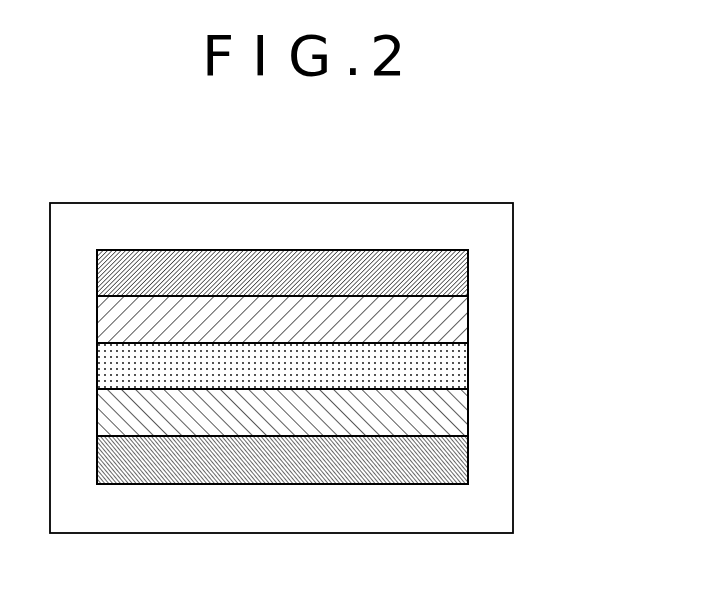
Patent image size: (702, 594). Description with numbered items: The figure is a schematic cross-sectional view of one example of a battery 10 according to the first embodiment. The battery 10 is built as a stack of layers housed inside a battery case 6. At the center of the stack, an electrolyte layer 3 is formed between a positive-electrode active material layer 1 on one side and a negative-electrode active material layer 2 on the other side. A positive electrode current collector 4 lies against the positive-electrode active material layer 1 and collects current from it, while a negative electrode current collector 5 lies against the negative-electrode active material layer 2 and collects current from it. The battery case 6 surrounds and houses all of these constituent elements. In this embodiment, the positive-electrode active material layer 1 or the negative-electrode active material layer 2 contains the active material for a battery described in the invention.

The battery 10 is at (496, 170).
The battery case 6 is at (482, 234).
The positive electrode current collector 4 is at (435, 280).
The positive-electrode active material layer 1 is at (435, 327).
The electrolyte layer 3 is at (435, 375).
The negative-electrode active material layer 2 is at (435, 421).
The negative electrode current collector 5 is at (435, 468).